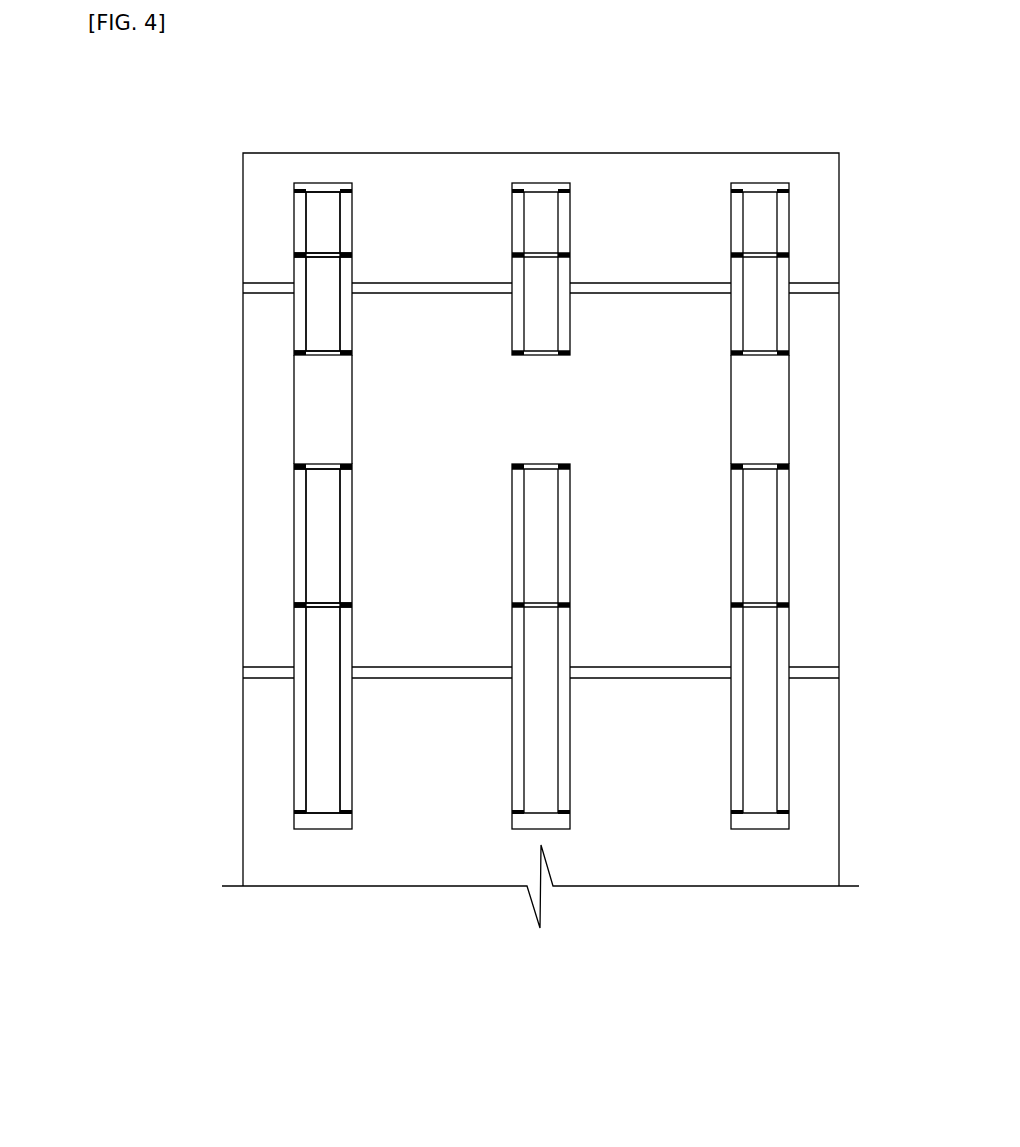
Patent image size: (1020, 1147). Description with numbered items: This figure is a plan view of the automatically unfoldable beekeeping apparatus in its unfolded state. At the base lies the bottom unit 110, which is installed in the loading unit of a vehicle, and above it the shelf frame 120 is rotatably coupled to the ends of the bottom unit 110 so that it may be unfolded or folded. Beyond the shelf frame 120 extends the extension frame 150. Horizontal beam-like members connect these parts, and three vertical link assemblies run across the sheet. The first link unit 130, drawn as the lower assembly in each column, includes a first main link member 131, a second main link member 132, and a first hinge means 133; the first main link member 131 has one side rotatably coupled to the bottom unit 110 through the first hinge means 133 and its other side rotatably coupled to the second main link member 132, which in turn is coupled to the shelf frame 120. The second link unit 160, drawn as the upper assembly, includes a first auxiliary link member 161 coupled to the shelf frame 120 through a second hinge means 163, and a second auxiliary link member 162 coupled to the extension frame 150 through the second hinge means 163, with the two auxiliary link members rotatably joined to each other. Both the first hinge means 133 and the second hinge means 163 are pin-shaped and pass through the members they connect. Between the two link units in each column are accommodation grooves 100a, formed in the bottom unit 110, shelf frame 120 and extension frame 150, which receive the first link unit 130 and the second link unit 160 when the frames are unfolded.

The bottom unit 110 is at (423, 783).
The shelf frame 120 is at (421, 370).
The extension frame 150 is at (638, 220).
The second link unit 160 is at (157, 176).
The first auxiliary link member 161 is at (318, 303).
The second auxiliary link member 162 is at (317, 220).
The second hinge means 163 is at (315, 255).
The first link unit 130 is at (167, 582).
The first main link member 131 is at (316, 635).
The second main link member 132 is at (315, 543).
The first hinge means 133 is at (317, 605).
The accommodation grooves 100a is at (328, 419).